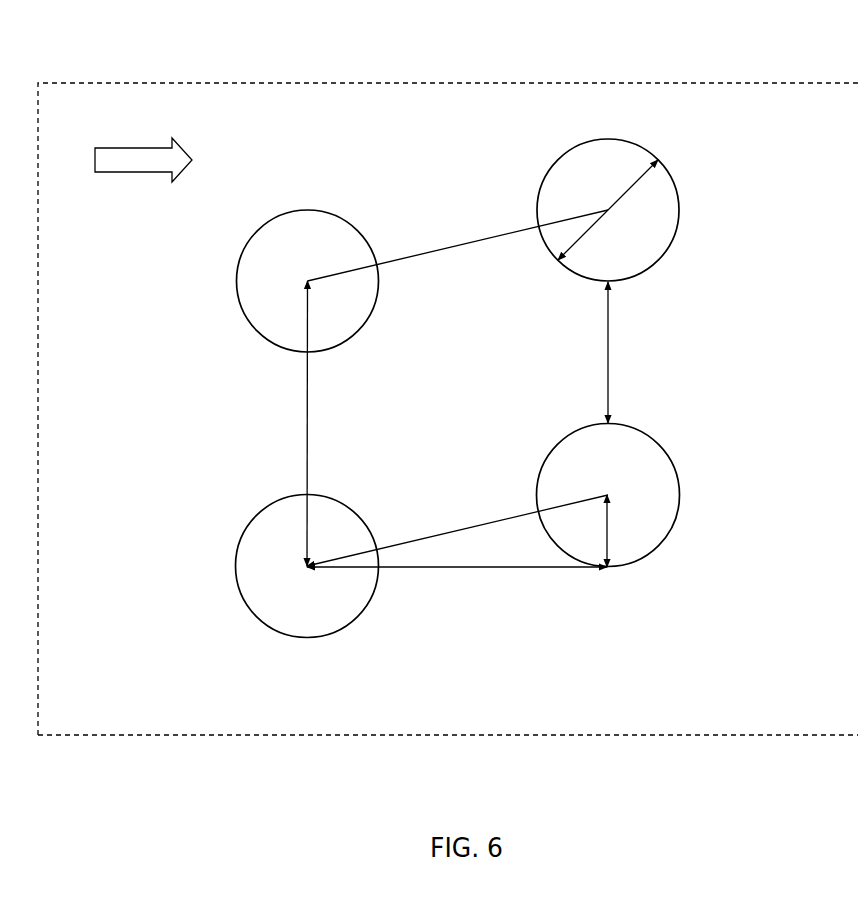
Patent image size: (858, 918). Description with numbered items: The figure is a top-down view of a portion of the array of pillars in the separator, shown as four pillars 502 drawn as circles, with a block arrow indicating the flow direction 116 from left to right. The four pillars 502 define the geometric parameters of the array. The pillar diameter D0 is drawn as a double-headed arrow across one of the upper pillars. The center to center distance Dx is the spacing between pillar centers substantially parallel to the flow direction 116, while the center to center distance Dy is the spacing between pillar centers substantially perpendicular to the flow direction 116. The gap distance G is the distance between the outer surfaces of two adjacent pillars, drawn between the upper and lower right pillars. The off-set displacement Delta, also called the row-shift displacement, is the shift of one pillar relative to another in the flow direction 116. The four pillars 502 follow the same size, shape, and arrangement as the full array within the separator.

The four pillars 502 is at (494, 83).
The flow direction 116 is at (175, 145).
The pillar diameter D'0 D0 is at (608, 210).
The gap distance G' G is at (634, 352).
The off-set displacement Δ' Delta is at (630, 531).
The center to center distance D'y Dy is at (272, 423).
The center to center distance D'x Dx is at (457, 593).